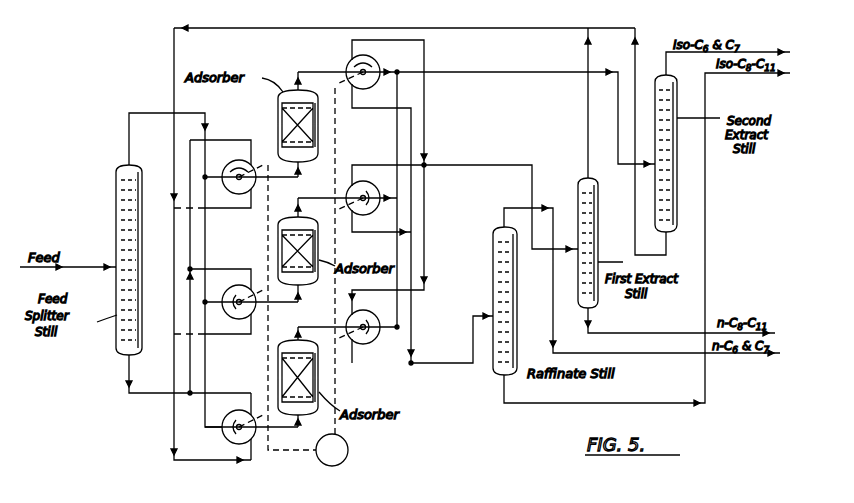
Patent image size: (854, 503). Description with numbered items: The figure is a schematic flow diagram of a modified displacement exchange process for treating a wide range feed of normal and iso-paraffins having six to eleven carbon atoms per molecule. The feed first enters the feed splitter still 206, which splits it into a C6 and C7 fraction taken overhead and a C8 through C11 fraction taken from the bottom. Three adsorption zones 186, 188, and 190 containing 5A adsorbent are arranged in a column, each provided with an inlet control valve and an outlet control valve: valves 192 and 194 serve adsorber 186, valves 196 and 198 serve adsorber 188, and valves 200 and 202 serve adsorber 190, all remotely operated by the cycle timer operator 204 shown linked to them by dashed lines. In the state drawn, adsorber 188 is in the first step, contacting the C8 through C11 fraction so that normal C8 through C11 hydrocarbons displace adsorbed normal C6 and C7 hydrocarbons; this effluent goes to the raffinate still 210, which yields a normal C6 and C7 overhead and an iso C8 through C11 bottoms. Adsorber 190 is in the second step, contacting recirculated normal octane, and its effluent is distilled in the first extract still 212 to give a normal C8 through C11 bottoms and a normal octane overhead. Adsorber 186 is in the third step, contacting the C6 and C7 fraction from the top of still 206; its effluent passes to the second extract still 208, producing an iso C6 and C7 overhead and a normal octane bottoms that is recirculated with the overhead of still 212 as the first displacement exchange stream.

The adsorption zone 186 is at (281, 105).
The adsorption zone 188 is at (280, 232).
The adsorption zone 190 is at (280, 355).
The inlet control valve 192 is at (238, 160).
The outlet control valve 194 is at (377, 63).
The inlet control valve 196 is at (238, 285).
The outlet control valve 198 is at (368, 216).
The inlet control valve 200 is at (233, 443).
The outlet control valve 202 is at (365, 345).
The cycle timer operator 204 is at (348, 454).
The feed splitter still 206 is at (125, 330).
The second extract still 208 is at (672, 82).
The still 210 is at (497, 243).
The first extract still 212 is at (580, 188).